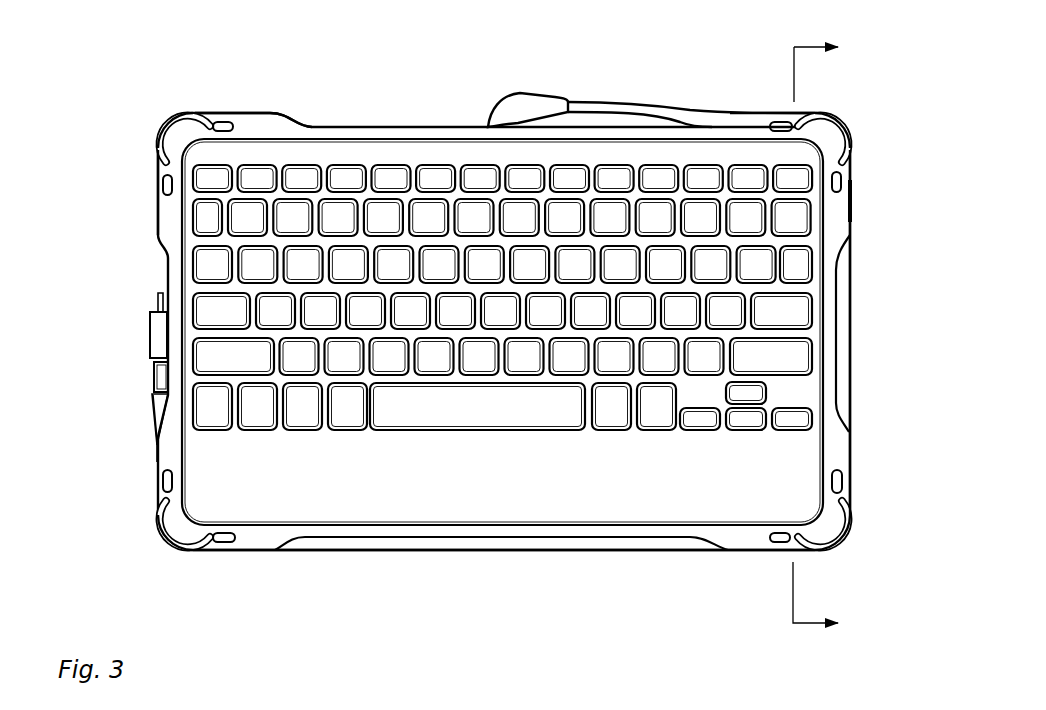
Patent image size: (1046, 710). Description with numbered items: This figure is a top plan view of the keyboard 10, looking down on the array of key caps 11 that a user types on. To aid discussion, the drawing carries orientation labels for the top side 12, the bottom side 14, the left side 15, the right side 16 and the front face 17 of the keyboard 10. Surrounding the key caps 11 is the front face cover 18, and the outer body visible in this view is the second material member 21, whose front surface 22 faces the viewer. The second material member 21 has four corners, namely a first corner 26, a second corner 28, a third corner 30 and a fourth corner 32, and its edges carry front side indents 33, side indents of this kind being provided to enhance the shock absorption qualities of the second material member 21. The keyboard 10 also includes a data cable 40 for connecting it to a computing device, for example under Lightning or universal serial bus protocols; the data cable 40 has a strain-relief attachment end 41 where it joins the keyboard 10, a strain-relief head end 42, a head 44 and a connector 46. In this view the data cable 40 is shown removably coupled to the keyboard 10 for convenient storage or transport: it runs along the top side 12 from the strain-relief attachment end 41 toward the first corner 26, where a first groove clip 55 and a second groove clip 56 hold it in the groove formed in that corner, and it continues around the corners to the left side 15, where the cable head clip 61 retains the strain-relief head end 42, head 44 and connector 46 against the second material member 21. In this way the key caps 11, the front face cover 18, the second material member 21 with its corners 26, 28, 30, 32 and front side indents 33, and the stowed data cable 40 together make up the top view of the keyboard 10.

The keyboard 10 is at (157, 65).
The key caps 11 is at (349, 178).
The top side 12 is at (350, 34).
The bottom side 14 is at (443, 584).
The left side 15 is at (113, 228).
The right side 16 is at (876, 354).
The front face 17 is at (664, 600).
The front face cover 18 is at (447, 491).
The second material member 21 is at (260, 127).
The front surface 22 is at (282, 127).
The first corner 26 is at (848, 116).
The second corner 28 is at (846, 552).
The third corner 30 is at (152, 550).
The fourth corner 32 is at (155, 125).
The front side indents 33 is at (223, 122).
The data cable 40 is at (638, 102).
The strain-relief attachment end 41 is at (528, 96).
The strain-relief head end 42 is at (153, 365).
The head 44 is at (150, 328).
The connector 46 is at (156, 295).
The first groove clip 55 is at (747, 112).
The second groove clip 56 is at (848, 206).
The cable head clip 61 is at (158, 387).